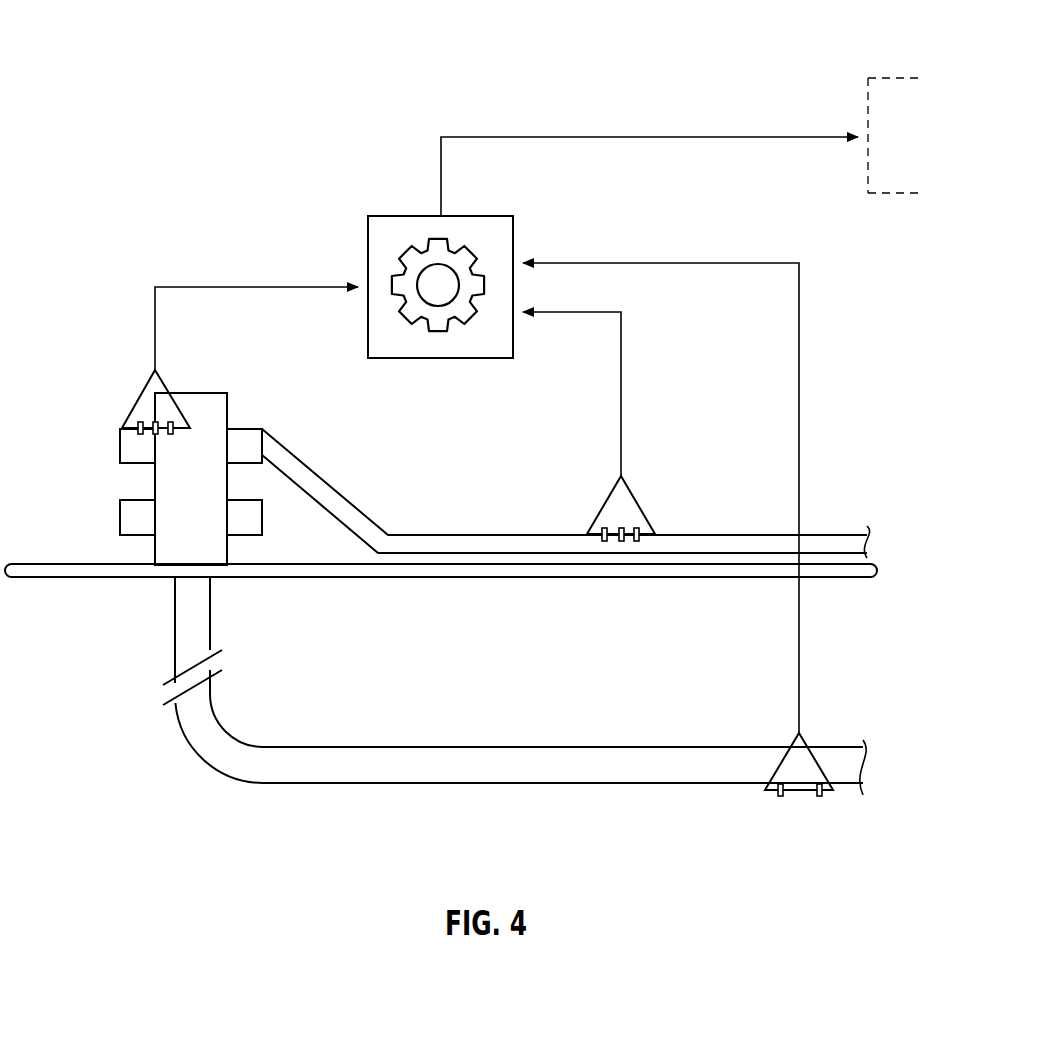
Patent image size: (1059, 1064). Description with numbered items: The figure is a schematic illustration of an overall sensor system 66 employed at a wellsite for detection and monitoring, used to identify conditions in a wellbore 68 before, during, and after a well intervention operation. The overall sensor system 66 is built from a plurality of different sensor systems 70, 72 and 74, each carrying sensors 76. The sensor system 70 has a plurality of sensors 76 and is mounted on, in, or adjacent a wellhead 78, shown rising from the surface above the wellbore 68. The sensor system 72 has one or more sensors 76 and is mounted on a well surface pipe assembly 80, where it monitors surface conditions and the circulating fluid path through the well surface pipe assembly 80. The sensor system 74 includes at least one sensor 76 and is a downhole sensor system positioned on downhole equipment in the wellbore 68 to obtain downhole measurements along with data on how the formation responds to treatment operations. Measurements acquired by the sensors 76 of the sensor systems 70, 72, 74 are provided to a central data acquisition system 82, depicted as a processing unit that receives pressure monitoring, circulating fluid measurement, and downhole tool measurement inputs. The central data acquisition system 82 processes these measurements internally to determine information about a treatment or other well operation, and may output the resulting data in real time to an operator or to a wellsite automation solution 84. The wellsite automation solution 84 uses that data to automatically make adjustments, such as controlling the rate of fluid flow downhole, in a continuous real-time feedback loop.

The overall sensor system 66 is at (201, 426).
The wellbore 68 is at (204, 762).
The sensor system 70 is at (172, 372).
The sensor system 72 is at (645, 480).
The sensor system 74 is at (817, 728).
The sensors 76 is at (170, 434).
The wellhead 78 is at (132, 484).
The well surface pipe assembly 80 is at (420, 524).
The central data acquisition system 82 is at (398, 205).
The wellsite automation solution 84 is at (887, 68).